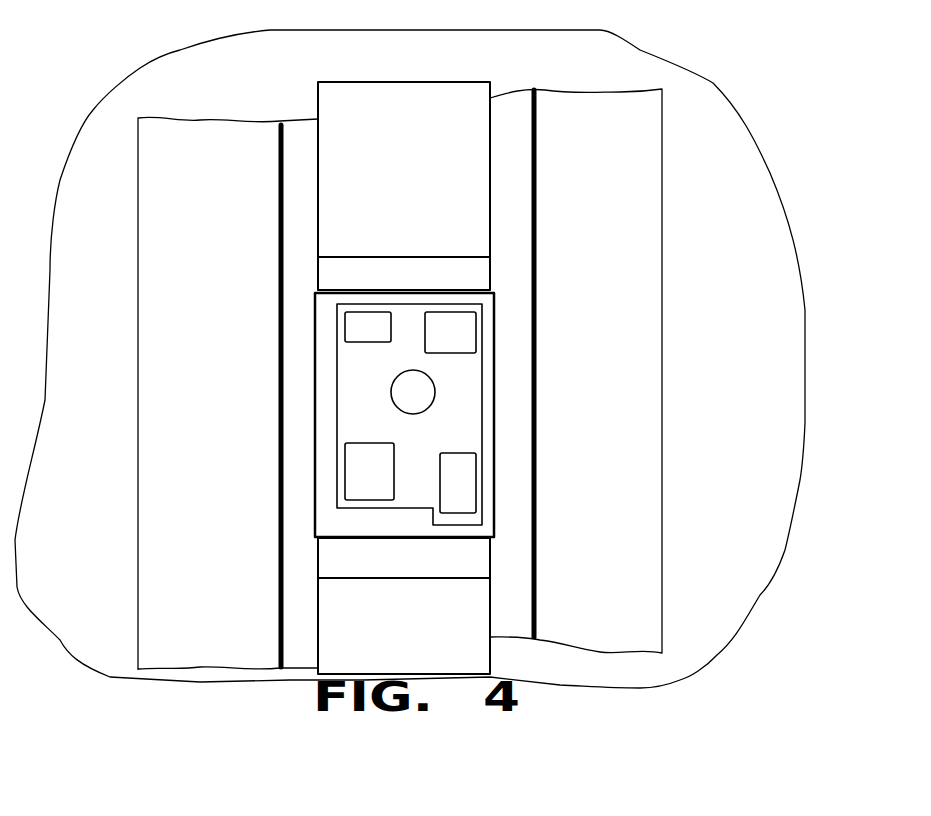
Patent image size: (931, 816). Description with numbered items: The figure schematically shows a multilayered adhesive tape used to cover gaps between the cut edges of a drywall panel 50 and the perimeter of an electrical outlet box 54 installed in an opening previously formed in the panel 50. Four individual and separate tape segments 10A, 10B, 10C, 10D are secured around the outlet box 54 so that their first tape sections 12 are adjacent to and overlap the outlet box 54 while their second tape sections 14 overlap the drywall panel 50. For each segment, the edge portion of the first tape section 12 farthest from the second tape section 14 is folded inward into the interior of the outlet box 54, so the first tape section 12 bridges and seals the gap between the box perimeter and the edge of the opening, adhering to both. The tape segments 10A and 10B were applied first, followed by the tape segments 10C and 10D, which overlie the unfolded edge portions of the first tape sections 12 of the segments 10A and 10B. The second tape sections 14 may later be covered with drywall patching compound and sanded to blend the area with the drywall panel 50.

The drywall panel 50 is at (222, 63).
The tape segment 10A is at (170, 388).
The tape segment 10B is at (557, 369).
The tape segment 10C is at (373, 189).
The tape segment 10D is at (366, 626).
The first tape section 12 is at (295, 220).
The second tape section 14 is at (425, 112).
The outlet box 54 is at (353, 367).